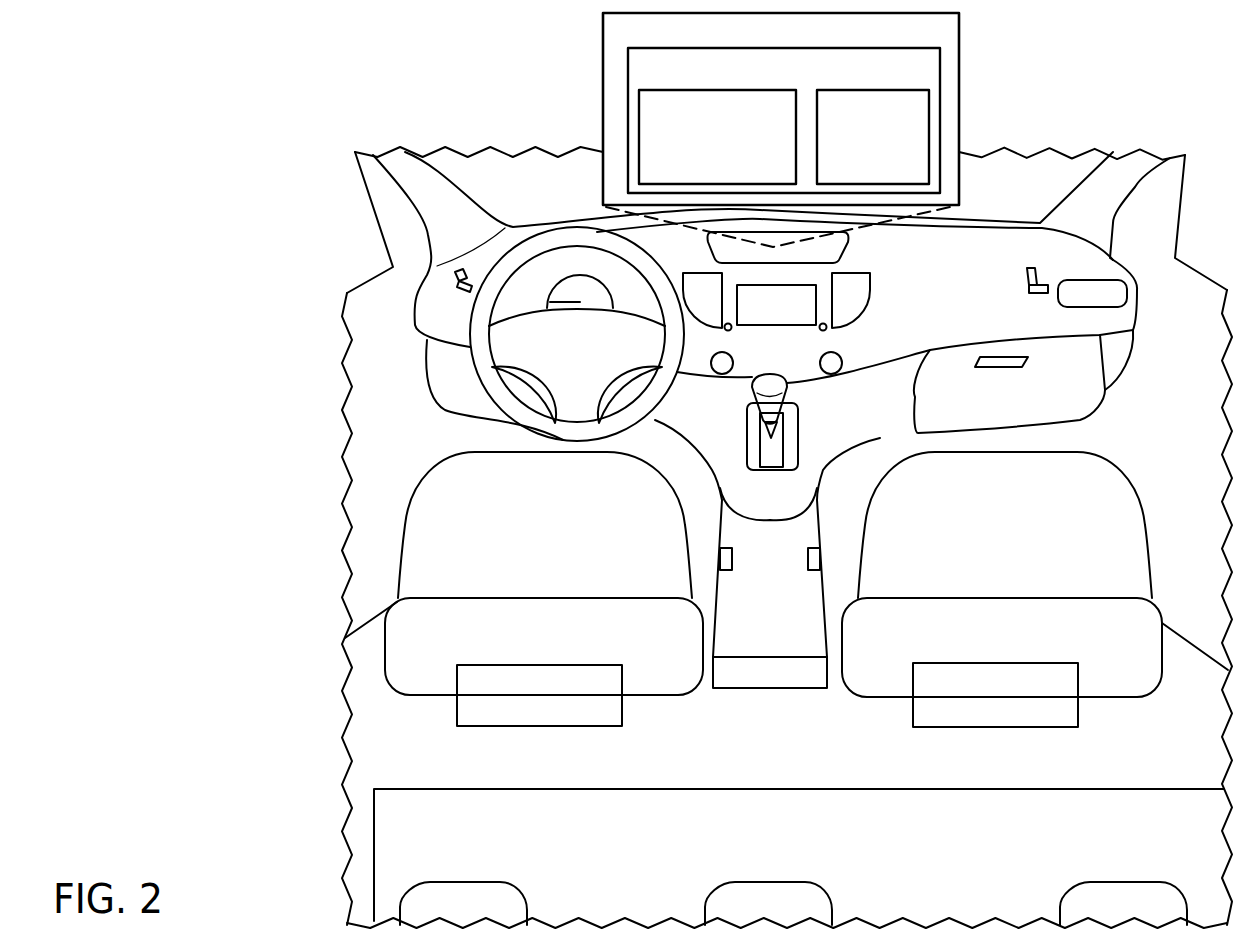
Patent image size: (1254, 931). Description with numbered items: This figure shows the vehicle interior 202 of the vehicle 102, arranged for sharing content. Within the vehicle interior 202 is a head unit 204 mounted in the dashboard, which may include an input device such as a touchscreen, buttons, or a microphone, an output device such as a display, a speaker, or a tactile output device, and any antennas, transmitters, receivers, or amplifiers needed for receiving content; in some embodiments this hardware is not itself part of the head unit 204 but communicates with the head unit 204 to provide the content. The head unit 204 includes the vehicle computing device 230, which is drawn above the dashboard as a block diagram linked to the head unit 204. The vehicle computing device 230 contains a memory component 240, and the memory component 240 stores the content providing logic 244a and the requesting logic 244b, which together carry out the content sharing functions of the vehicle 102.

The vehicle 102 is at (333, 263).
The vehicle interior 202 is at (998, 204).
The head unit 204 is at (846, 290).
The vehicle computing device 230 is at (954, 40).
The memory component 240 is at (898, 79).
The content providing logic 244a is at (747, 176).
The requesting logic 244b is at (902, 176).